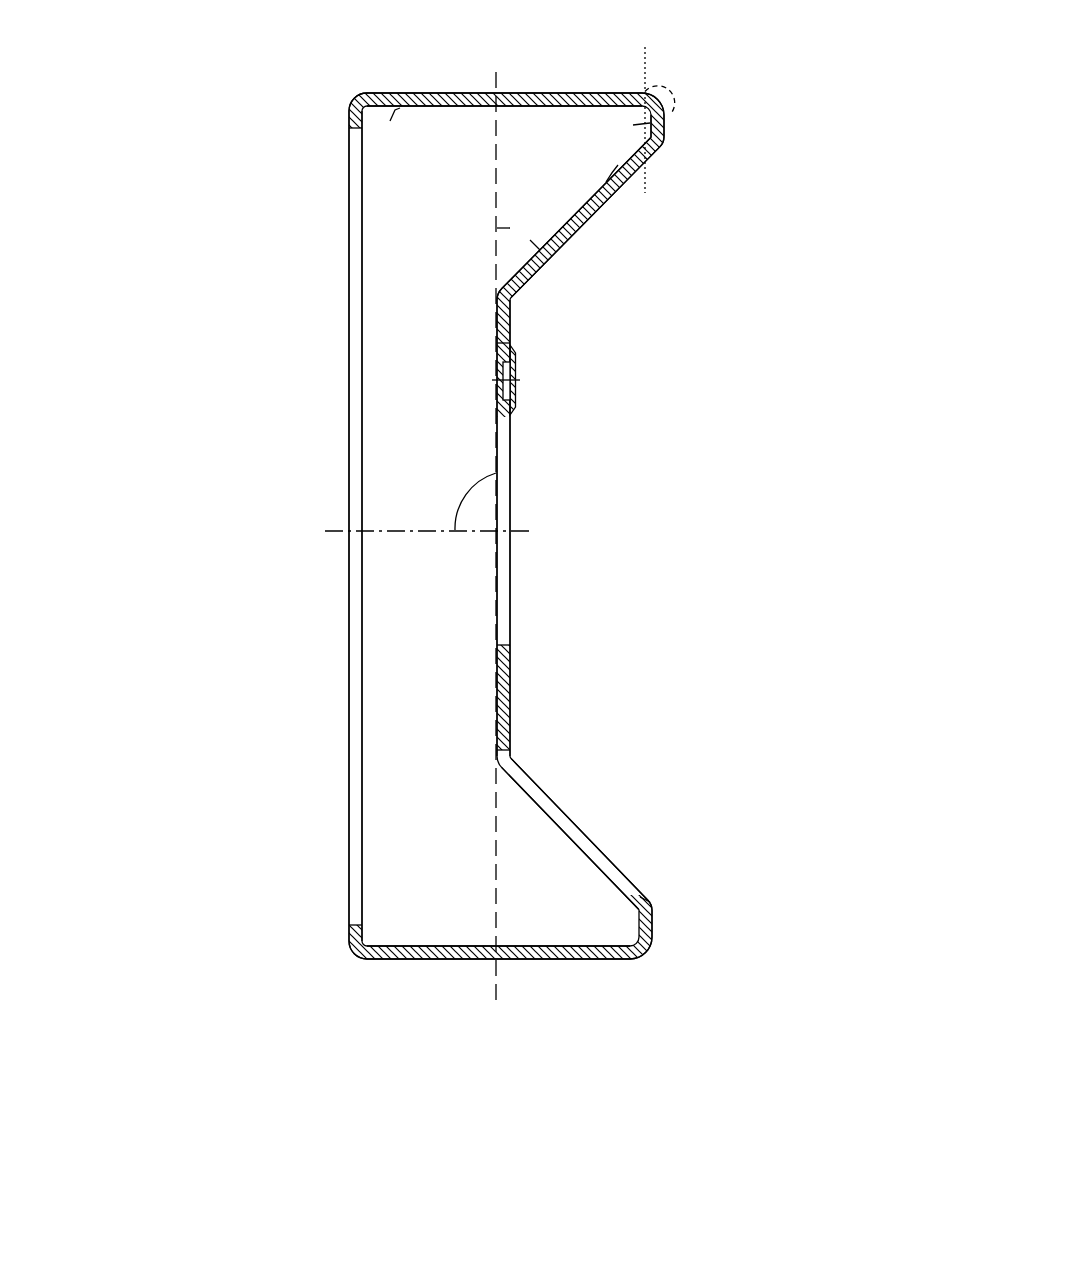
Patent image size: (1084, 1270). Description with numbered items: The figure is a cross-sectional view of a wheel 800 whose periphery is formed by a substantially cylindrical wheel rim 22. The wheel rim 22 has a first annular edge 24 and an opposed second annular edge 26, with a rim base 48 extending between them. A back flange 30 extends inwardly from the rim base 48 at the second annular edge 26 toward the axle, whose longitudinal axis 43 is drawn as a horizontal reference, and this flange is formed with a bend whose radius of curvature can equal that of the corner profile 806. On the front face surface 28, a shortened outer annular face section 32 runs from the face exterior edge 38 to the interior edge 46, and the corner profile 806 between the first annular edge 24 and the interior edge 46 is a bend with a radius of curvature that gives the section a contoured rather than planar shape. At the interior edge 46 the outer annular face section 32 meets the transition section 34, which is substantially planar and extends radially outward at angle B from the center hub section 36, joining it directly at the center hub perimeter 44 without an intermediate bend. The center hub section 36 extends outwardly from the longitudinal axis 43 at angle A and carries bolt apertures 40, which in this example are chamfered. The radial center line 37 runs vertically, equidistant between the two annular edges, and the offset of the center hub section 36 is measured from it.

The wheel 800 is at (245, 70).
The wheel rim 22 is at (574, 70).
The first annular edge 24 is at (642, 93).
The second annular edge 26 is at (365, 93).
The front face surface 28 is at (757, 297).
The back flange 30 is at (349, 120).
The outer annular face section 32 is at (664, 135).
The transition section 34 is at (622, 188).
The center hub section 36 is at (515, 306).
The wheel center line 37 is at (496, 193).
The face exterior edge 38 is at (665, 126).
The bolt apertures 40 is at (528, 380).
The longitudinal axis 43 is at (340, 530).
The center hub perimeter 44 is at (497, 296).
The interior edge 46 is at (658, 140).
The rim base 48 is at (415, 92).
The corner profile 806 is at (677, 85).